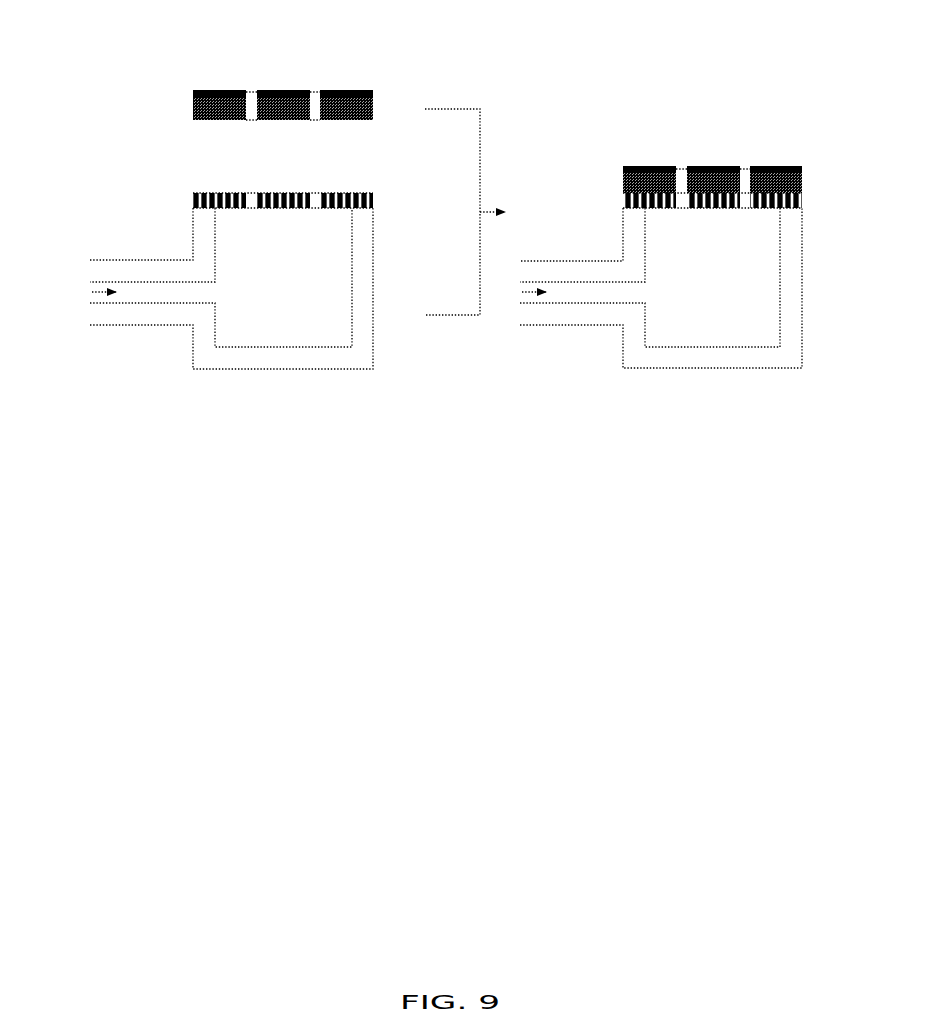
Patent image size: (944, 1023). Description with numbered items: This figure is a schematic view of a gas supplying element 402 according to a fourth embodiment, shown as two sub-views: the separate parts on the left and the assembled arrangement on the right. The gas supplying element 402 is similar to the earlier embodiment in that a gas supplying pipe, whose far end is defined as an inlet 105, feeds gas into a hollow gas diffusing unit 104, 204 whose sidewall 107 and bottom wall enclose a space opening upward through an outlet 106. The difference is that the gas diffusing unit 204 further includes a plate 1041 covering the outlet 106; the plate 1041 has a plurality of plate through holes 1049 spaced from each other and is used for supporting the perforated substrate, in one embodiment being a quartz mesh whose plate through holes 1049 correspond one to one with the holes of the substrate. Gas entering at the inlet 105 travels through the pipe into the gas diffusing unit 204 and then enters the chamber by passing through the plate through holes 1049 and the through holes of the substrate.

The gas supplying element 402 is at (133, 191).
The plate 1041 is at (233, 192).
The plate through holes 1049 is at (313, 209).
The gas diffusing unit 204 is at (363, 292).
The inlet 105 is at (112, 289).
The sidewall 107 is at (803, 202).
The gas diffusing unit 104 is at (793, 292).
The outlet 106 is at (745, 209).